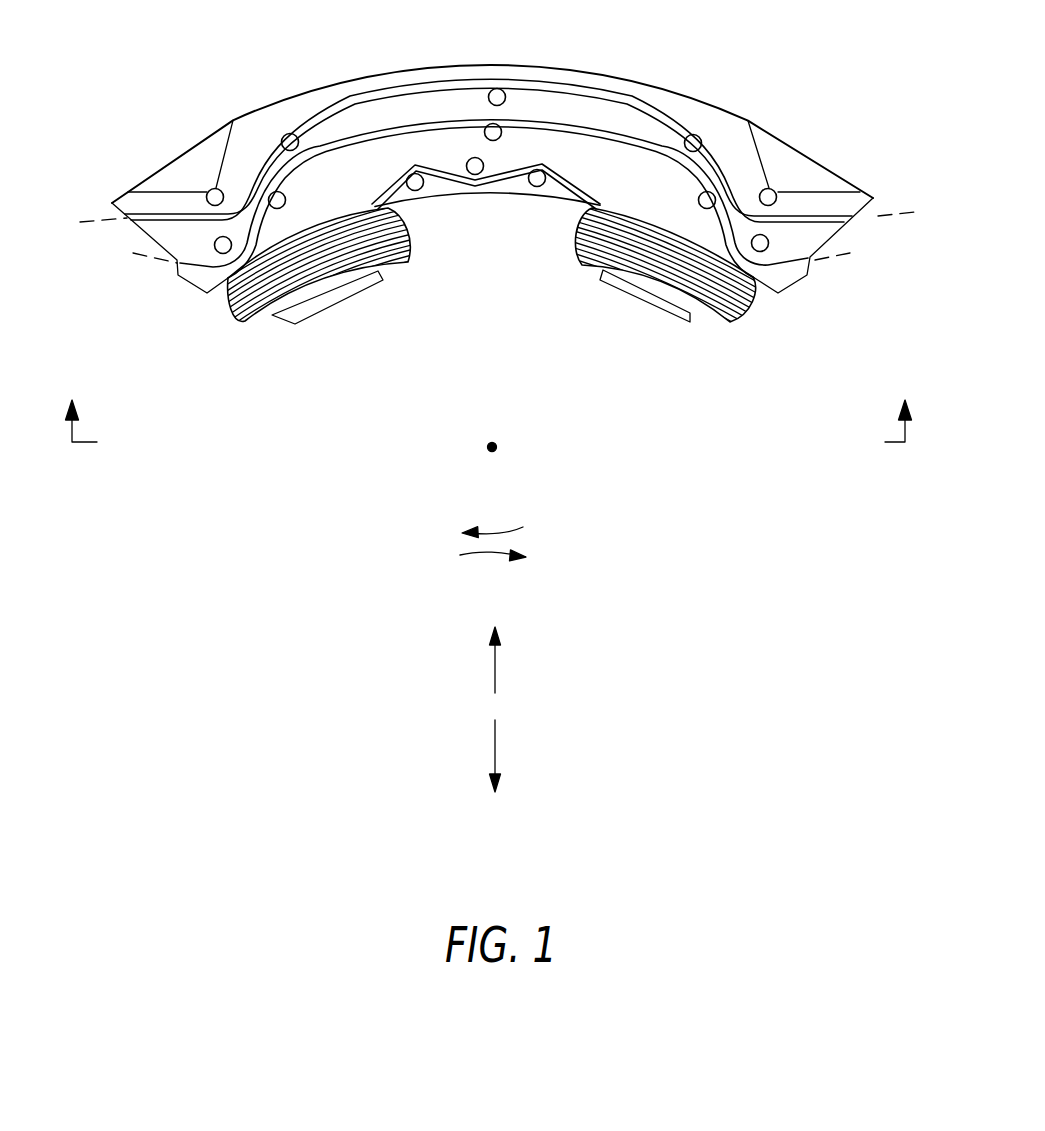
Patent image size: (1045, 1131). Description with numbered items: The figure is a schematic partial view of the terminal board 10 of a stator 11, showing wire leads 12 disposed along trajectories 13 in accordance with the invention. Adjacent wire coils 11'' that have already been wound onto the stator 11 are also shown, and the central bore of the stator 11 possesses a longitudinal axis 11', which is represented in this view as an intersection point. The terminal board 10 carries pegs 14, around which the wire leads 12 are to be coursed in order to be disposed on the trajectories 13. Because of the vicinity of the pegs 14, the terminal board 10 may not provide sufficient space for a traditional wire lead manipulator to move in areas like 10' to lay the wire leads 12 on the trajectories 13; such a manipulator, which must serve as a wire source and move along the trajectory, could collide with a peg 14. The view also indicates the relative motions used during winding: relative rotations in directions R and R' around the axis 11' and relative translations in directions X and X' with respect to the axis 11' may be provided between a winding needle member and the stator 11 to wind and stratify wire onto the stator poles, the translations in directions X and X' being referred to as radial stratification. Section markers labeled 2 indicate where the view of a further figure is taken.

The terminal board 10 is at (492, 101).
The areas of the terminal board 10' is at (531, 141).
The stator 11 is at (473, 383).
The longitudinal axis 11' is at (511, 470).
The wire coils 11'' is at (490, 299).
The wire leads 12 is at (636, 100).
The trajectories 13 is at (97, 178).
The pegs 14 is at (209, 188).
The section line 2- 2 is at (489, 421).
The rotation direction R is at (483, 516).
The rotation direction R' is at (484, 575).
The translation direction X is at (527, 660).
The translation direction X' is at (535, 756).